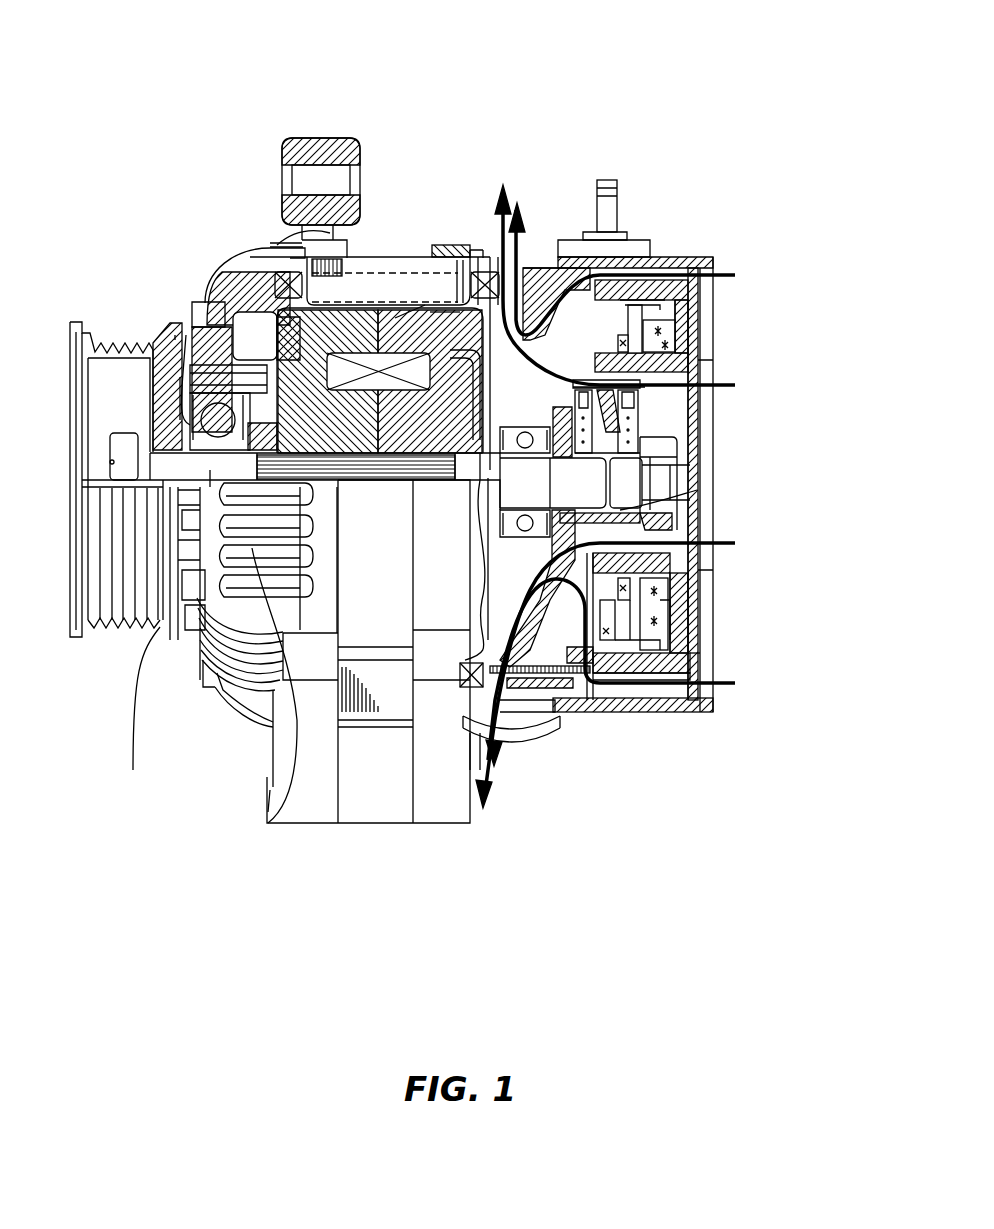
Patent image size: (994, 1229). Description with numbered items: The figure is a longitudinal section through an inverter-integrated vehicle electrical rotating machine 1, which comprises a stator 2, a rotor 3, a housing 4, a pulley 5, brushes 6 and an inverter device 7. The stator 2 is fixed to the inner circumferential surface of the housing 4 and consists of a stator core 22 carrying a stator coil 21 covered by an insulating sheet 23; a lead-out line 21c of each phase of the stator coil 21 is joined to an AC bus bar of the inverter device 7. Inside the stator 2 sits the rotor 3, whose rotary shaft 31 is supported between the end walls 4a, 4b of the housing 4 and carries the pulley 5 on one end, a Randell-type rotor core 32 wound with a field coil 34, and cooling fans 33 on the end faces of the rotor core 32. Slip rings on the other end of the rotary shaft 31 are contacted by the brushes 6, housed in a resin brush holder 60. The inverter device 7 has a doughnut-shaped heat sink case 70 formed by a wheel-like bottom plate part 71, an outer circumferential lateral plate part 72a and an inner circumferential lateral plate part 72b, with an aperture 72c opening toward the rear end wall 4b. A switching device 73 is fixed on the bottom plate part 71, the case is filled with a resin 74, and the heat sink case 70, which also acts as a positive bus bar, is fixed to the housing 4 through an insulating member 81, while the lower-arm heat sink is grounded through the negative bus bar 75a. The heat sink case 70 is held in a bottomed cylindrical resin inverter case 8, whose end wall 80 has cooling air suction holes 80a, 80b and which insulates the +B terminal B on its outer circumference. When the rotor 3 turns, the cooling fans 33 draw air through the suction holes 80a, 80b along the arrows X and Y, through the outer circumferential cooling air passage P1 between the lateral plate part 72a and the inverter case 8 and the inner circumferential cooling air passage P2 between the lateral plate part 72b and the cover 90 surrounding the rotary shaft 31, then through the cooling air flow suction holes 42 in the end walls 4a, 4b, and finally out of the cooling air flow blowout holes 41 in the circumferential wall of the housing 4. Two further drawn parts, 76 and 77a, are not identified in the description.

The vehicle electrical rotating machine 1 is at (514, 73).
The stator 2 is at (444, 257).
The rotor 3 is at (442, 330).
The housing 4 is at (200, 342).
The end wall 4a is at (212, 290).
The rear end wall 4b is at (533, 703).
The pulley 5 is at (153, 400).
The brush 6 is at (697, 450).
The inverter device 7 is at (714, 293).
The inverter case 8 is at (697, 500).
The stator coil 21 is at (262, 277).
The lead-out line 21c is at (507, 712).
The stator core 22 is at (378, 362).
The insulating sheet 23 is at (356, 306).
The rotary shaft 31 is at (140, 715).
The rotor core 32 is at (308, 440).
The cooling fan 33 is at (205, 300).
The field coil 34 is at (400, 338).
The cooling air flow blowout hole 41 is at (270, 250).
The cooling air flow suction hole 42 is at (207, 347).
The brush holder 60 is at (635, 432).
The heat sink case 70 is at (664, 707).
The bottom plate part 71 is at (688, 330).
The outer circumferential lateral plate part 72a is at (640, 290).
The inner circumferential lateral plate part 72b is at (692, 390).
The aperture 72c is at (612, 338).
The switching device 73 is at (668, 598).
The resin 74 is at (630, 690).
The −bus bar 75a is at (670, 270).
The rectifier housing 76 is at (697, 657).
The terminal board 77a is at (665, 615).
The end wall 80 is at (700, 462).
The cooling air suction hole 80a is at (695, 303).
The cooling air suction hole 80b is at (698, 363).
The insulating member 81 is at (560, 257).
The cover 90 is at (633, 503).
The +B terminal B is at (612, 200).
The outer circumferential cooling air passage P1 is at (690, 270).
The inner circumferential cooling air passage P2 is at (650, 430).
The arrow X is at (623, 484).
The arrow Y is at (620, 496).